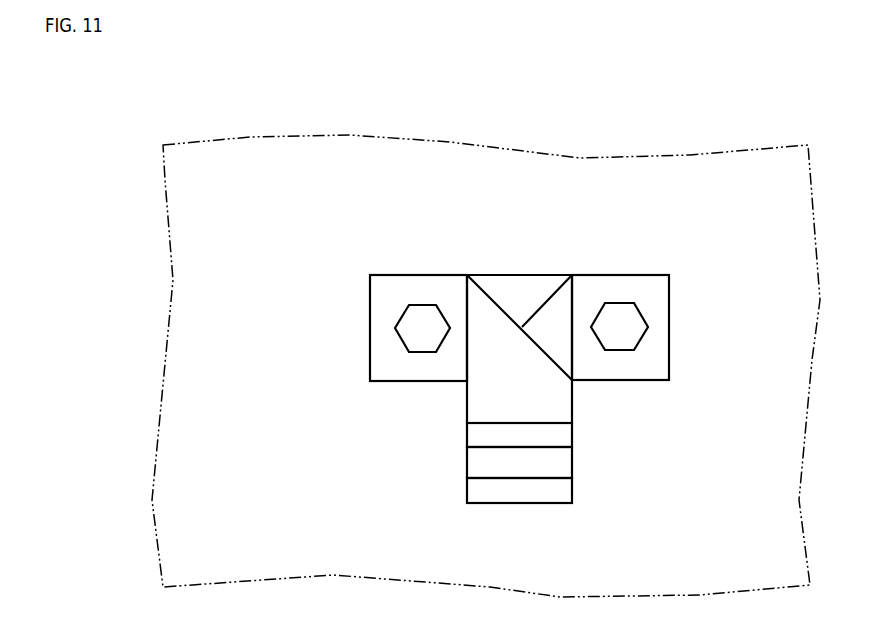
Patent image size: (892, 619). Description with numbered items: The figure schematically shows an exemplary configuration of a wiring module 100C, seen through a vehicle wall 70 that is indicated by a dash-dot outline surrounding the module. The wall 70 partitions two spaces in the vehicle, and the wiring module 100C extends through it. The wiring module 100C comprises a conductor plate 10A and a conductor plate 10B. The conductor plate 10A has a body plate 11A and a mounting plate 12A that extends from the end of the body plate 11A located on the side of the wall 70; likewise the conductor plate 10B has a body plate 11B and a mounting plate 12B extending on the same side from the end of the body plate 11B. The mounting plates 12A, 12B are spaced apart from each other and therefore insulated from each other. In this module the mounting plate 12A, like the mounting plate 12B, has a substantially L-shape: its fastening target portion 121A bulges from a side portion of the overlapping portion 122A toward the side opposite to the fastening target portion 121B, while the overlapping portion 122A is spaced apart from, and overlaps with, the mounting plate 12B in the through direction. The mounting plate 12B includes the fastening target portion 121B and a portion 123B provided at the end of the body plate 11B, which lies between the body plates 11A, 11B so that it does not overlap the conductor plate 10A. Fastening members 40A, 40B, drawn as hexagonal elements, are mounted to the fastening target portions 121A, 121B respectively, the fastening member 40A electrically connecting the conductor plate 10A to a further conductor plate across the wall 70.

The wall 70 is at (688, 163).
The wiring module 100C is at (691, 289).
The conductor plate 10A is at (229, 372).
The mounting plate 12A is at (294, 347).
The fastening target portion 121A is at (387, 363).
The overlapping portion 122A is at (483, 398).
The body plate 11A is at (480, 440).
The conductor plate 10B is at (732, 422).
The mounting plate 12B is at (664, 397).
The fastening target portion 121B is at (632, 370).
The portion 123B is at (558, 460).
The body plate 11B is at (568, 490).
The fastening member 40A is at (423, 310).
The fastening member 40B is at (621, 309).